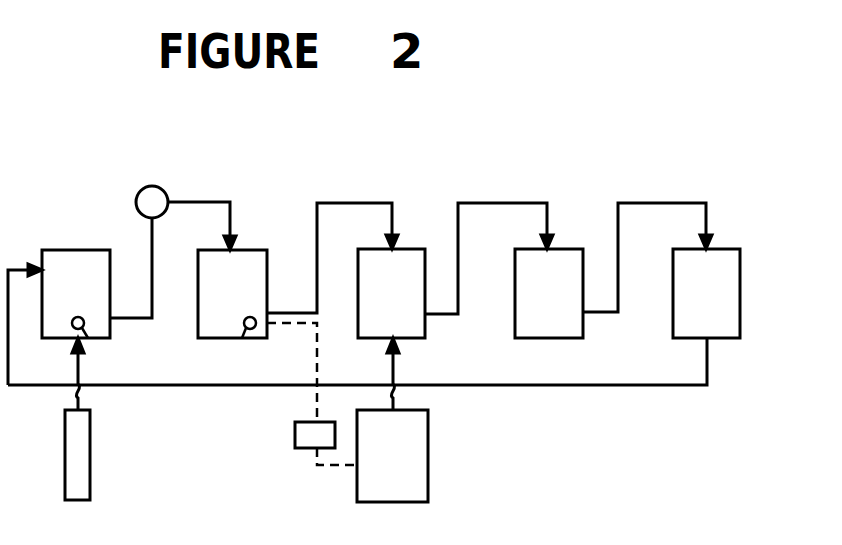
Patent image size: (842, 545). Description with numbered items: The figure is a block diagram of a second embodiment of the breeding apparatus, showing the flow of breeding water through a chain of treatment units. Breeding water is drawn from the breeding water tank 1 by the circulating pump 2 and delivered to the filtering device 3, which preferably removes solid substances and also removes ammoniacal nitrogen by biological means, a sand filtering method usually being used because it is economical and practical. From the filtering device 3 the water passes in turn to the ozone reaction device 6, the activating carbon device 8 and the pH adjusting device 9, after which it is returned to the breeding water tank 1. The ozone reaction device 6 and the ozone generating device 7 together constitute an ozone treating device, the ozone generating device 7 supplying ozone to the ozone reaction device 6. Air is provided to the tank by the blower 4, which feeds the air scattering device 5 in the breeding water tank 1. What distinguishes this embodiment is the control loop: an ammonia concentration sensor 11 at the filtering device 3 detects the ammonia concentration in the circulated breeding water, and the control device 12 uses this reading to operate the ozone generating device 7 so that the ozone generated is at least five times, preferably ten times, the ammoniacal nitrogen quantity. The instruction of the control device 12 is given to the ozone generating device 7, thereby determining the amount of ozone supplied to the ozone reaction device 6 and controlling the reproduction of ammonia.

The breeding water tank 1 is at (68, 250).
The circulating pump 2 is at (138, 197).
The filtering device 3 is at (247, 250).
The blower 4 is at (90, 445).
The air scattering device 5 is at (84, 330).
The ozone reaction device 6 is at (405, 249).
The ozone generating device 7 is at (428, 445).
The activating carbon device 8 is at (556, 249).
The pH adjusting device 9 is at (722, 249).
The ammonia concentration sensor 11 is at (244, 328).
The control device 12 is at (295, 436).